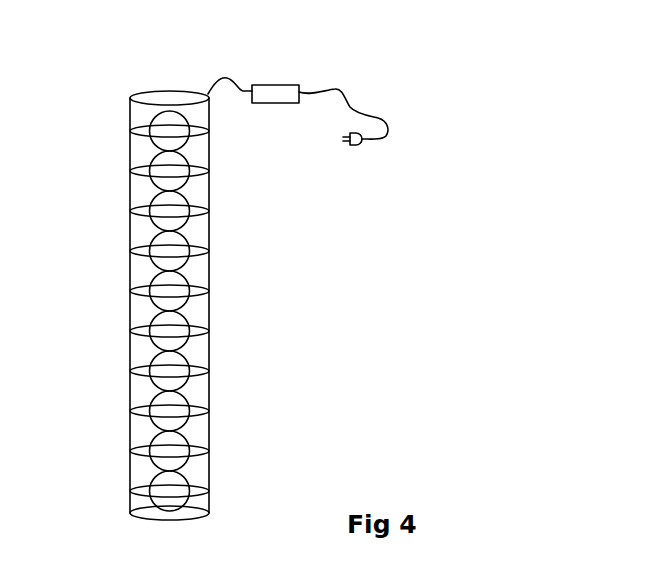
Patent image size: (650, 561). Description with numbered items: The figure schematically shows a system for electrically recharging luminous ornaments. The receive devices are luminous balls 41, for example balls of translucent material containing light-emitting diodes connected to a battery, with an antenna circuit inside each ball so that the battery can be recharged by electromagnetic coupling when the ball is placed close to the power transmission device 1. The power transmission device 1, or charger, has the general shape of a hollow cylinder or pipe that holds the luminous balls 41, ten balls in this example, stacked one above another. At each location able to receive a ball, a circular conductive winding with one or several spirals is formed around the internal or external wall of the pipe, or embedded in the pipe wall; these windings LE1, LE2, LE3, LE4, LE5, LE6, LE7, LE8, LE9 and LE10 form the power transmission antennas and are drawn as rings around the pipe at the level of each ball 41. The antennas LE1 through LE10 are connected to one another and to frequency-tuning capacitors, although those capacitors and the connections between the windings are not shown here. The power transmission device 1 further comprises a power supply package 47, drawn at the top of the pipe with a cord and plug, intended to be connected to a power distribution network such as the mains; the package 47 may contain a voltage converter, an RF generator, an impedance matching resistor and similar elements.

The power transmission device 1 is at (130, 236).
The luminous ball 41 is at (150, 152).
The power supply package 47 is at (272, 85).
The conductive winding LE1 is at (173, 133).
The conductive winding LE2 is at (209, 171).
The conductive winding LE3 is at (209, 211).
The conductive winding LE4 is at (209, 251).
The conductive winding LE5 is at (209, 291).
The conductive winding LE6 is at (209, 331).
The conductive winding LE7 is at (209, 371).
The conductive winding LE8 is at (209, 411).
The conductive winding LE9 is at (209, 451).
The conductive winding LE10 is at (209, 491).